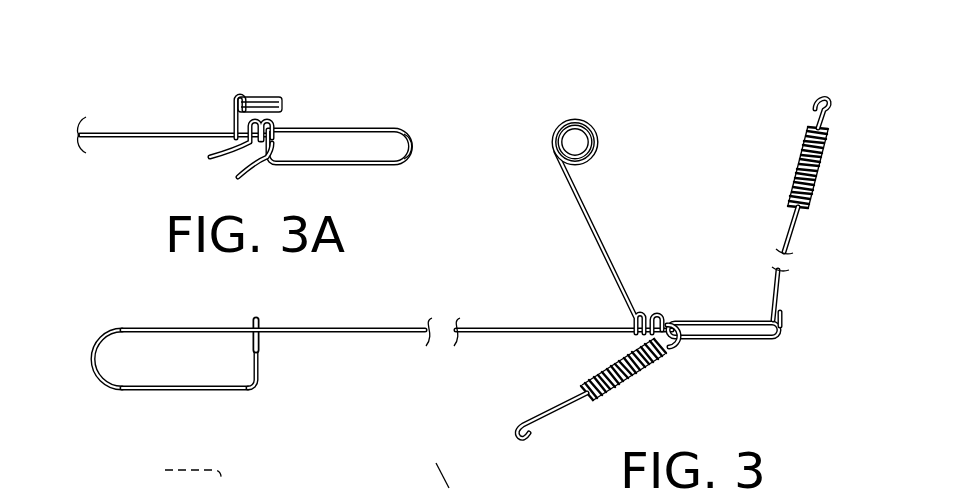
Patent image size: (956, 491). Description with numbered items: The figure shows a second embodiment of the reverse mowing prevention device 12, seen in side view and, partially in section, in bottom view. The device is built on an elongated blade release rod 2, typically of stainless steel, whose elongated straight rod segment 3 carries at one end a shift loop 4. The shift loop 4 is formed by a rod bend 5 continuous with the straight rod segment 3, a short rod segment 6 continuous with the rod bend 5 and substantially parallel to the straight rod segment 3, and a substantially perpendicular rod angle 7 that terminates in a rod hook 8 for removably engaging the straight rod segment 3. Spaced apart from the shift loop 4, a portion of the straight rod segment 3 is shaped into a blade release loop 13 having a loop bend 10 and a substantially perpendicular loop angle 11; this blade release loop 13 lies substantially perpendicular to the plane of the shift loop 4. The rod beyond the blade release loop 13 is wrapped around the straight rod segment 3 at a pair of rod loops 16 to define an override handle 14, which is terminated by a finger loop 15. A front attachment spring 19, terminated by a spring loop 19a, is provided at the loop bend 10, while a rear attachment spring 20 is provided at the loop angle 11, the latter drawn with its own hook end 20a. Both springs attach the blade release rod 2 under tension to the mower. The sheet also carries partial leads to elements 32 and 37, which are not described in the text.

In FIG. 3A, the blade release rod 2 is at (173, 108).
In FIG. 3, the blade release rod 2 is at (397, 305).
In FIG. 3A, the straight rod segment 3 is at (138, 133).
In FIG. 3, the straight rod segment 3 is at (332, 328).
In FIG. 3, the shift loop 4 is at (157, 356).
In FIG. 3, the rod bend 5 is at (100, 340).
In FIG. 3, the short rod segment 6 is at (203, 389).
In FIG. 3, the rod angle 7 is at (259, 386).
In FIG. 3, the rod hook 8 is at (255, 320).
In FIG. 3A, the loop bend 10 is at (413, 145).
In FIG. 3, the loop bend 10 is at (774, 338).
In FIG. 3A, the loop angle 11 is at (270, 158).
In FIG. 3, the loop angle 11 is at (679, 348).
In FIG. 3A, the reverse mowing prevention device 12 is at (164, 97).
In FIG. 3, the reverse mowing prevention device 12 is at (397, 297).
In FIG. 3A, the blade release loop 13 is at (383, 114).
In FIG. 3, the blade release loop 13 is at (743, 364).
In FIG. 3A, the override handle 14 is at (262, 91).
In FIG. 3, the override handle 14 is at (602, 200).
In FIG. 3A, the finger loop 15 is at (252, 97).
In FIG. 3, the finger loop 15 is at (596, 133).
In FIG. 3A, the rod loops 16 is at (253, 143).
In FIG. 3, the rod loops 16 is at (659, 318).
In FIG. 3, the front attachment spring 19 is at (796, 171).
In FIG. 3, the spring loop 19a is at (824, 100).
In FIG. 3, the rear attachment spring 20 is at (556, 388).
In FIG. 3, the spring hook 20a is at (522, 413).
In FIG. 3, the frame member 32 is at (177, 473).
In FIG. 3, the frame member 37 is at (430, 467).